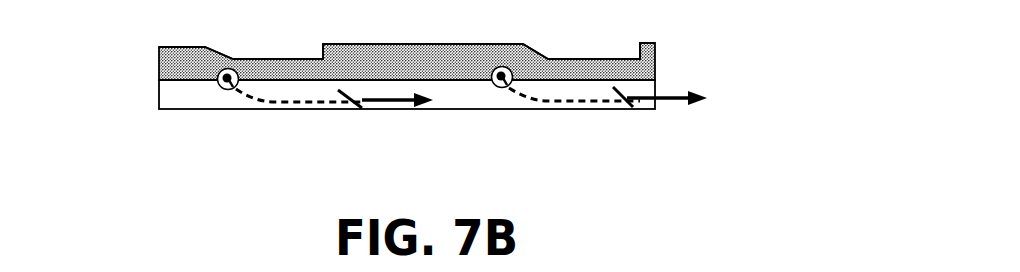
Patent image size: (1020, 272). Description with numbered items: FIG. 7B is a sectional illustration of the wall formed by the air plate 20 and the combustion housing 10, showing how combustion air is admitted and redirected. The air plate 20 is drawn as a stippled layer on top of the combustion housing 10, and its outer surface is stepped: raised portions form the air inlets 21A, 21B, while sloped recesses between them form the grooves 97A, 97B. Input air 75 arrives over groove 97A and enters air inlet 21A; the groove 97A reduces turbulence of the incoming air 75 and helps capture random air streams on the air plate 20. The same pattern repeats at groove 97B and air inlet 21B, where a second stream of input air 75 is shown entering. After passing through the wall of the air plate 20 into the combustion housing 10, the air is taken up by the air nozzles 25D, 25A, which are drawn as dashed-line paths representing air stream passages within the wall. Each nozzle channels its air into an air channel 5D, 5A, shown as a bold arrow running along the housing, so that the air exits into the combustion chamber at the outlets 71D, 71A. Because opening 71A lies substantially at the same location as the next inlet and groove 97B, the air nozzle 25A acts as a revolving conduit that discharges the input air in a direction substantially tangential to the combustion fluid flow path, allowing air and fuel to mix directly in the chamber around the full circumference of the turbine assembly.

The combustion housing 10 is at (665, 77).
The air plate 20 is at (665, 43).
The air inlet 21A is at (331, 41).
The air inlet 21B is at (646, 37).
The groove 97A is at (216, 63).
The groove 97B is at (528, 41).
The input air 75 is at (301, 55).
The air nozzle 25D is at (272, 108).
The air nozzle 25A is at (542, 109).
The air channel outlet 71D is at (369, 119).
The opening 71A is at (642, 118).
The air channel 5D is at (397, 92).
The air channel 5A is at (667, 91).